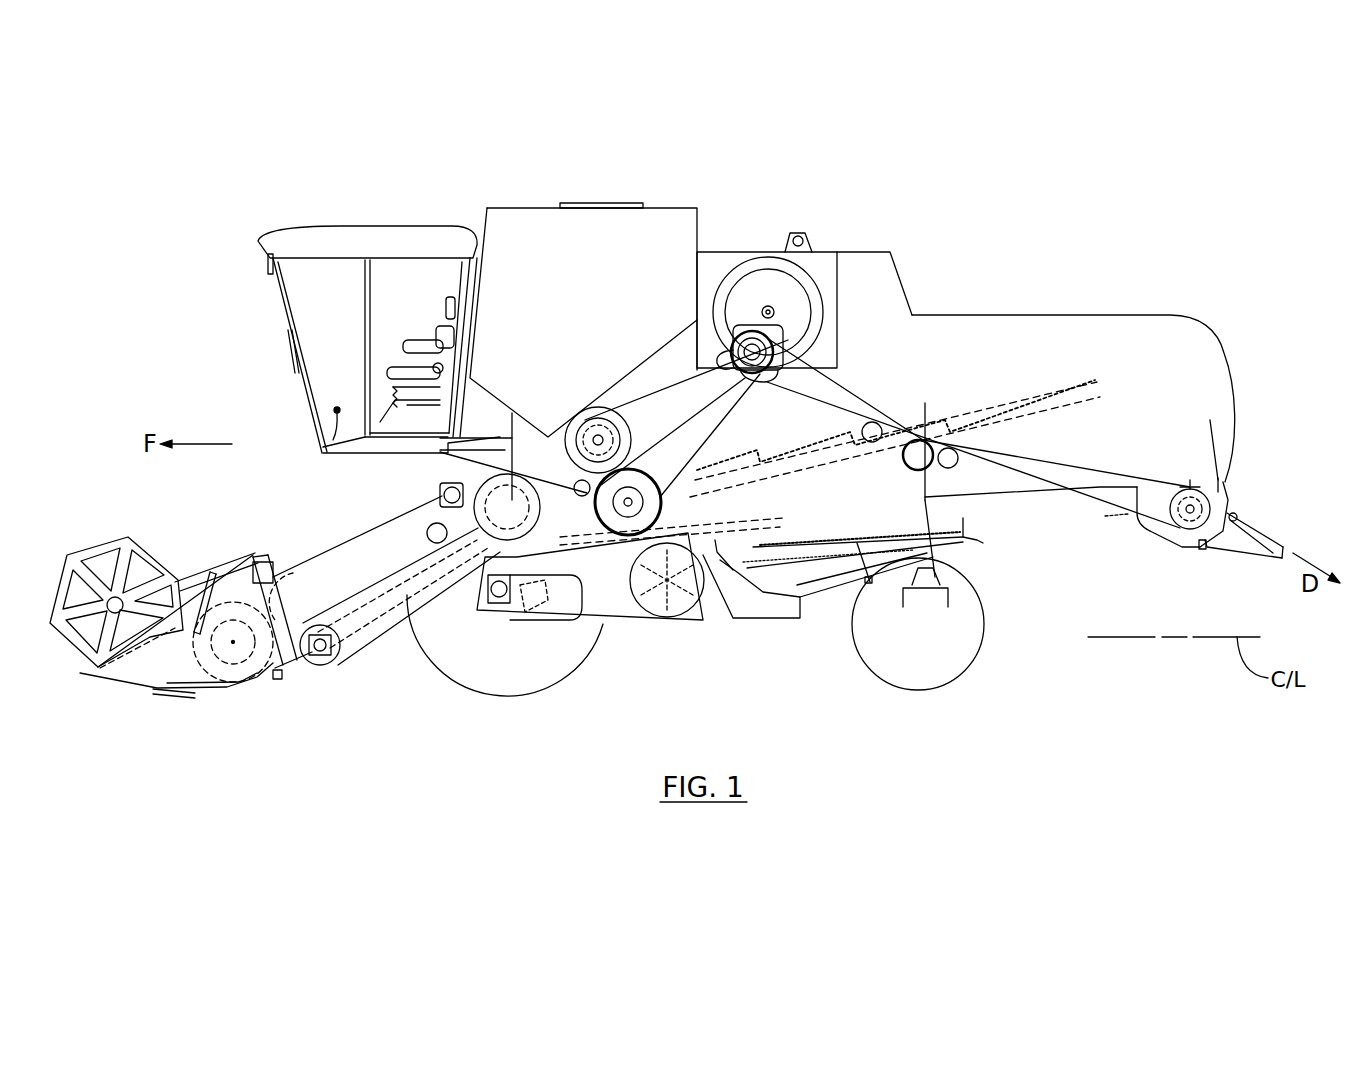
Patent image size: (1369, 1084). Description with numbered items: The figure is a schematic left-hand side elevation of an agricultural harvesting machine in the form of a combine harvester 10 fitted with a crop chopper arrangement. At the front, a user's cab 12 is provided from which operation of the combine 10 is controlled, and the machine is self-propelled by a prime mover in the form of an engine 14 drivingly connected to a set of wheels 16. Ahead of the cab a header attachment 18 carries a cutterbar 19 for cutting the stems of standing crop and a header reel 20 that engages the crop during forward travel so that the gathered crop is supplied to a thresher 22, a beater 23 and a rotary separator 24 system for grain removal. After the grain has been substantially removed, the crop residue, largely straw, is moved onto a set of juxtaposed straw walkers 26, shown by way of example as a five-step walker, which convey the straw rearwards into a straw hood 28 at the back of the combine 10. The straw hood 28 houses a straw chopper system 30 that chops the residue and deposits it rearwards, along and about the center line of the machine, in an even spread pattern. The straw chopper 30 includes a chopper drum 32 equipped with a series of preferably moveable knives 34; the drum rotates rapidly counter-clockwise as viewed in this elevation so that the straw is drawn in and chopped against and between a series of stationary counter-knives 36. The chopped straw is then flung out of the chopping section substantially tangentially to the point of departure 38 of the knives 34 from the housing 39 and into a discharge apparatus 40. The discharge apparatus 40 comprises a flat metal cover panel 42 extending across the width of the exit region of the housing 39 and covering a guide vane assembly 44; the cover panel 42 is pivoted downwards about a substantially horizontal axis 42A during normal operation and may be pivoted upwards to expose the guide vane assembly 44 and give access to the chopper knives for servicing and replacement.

The combine harvester 10 is at (809, 652).
The user's cab 12 is at (330, 240).
The engine 14 is at (746, 278).
The wheels 16 is at (514, 680).
The header attachment 18 is at (227, 719).
The cutterbar 19 is at (167, 692).
The header reel 20 is at (137, 548).
The thresher 22 is at (548, 457).
The beater 23 is at (593, 430).
The rotary separator 24 is at (712, 553).
The straw walkers 26 is at (927, 440).
The straw hood 28 is at (1137, 335).
The straw chopper system 30 is at (1166, 577).
The chopper drum 32 is at (1212, 500).
The knives 34 is at (1190, 487).
The stationary counter-knives 36 is at (1150, 522).
The point of departure 38 is at (1203, 551).
The housing 39 is at (1167, 540).
The discharge apparatus 40 is at (1290, 529).
The cover panel 42 is at (1253, 537).
The axis 42A is at (1235, 514).
The guide vane assembly 44 is at (1250, 550).